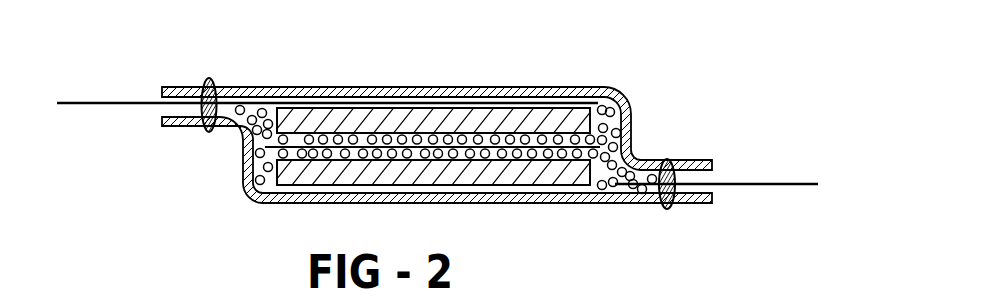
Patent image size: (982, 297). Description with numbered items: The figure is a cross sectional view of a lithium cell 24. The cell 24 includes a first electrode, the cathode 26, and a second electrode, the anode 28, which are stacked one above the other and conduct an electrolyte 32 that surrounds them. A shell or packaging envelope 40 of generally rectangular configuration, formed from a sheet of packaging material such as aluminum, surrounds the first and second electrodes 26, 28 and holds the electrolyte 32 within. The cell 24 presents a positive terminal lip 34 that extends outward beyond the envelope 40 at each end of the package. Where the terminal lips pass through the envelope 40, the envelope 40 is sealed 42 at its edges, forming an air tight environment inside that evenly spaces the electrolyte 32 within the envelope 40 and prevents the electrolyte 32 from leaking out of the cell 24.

The cell 24 is at (663, 108).
The cathode 26 is at (557, 121).
The anode 28 is at (563, 170).
The electrolyte 32 is at (254, 156).
The positive terminal lip 34 is at (96, 103).
The packaging envelope 40 is at (247, 80).
The seal 42 is at (209, 79).